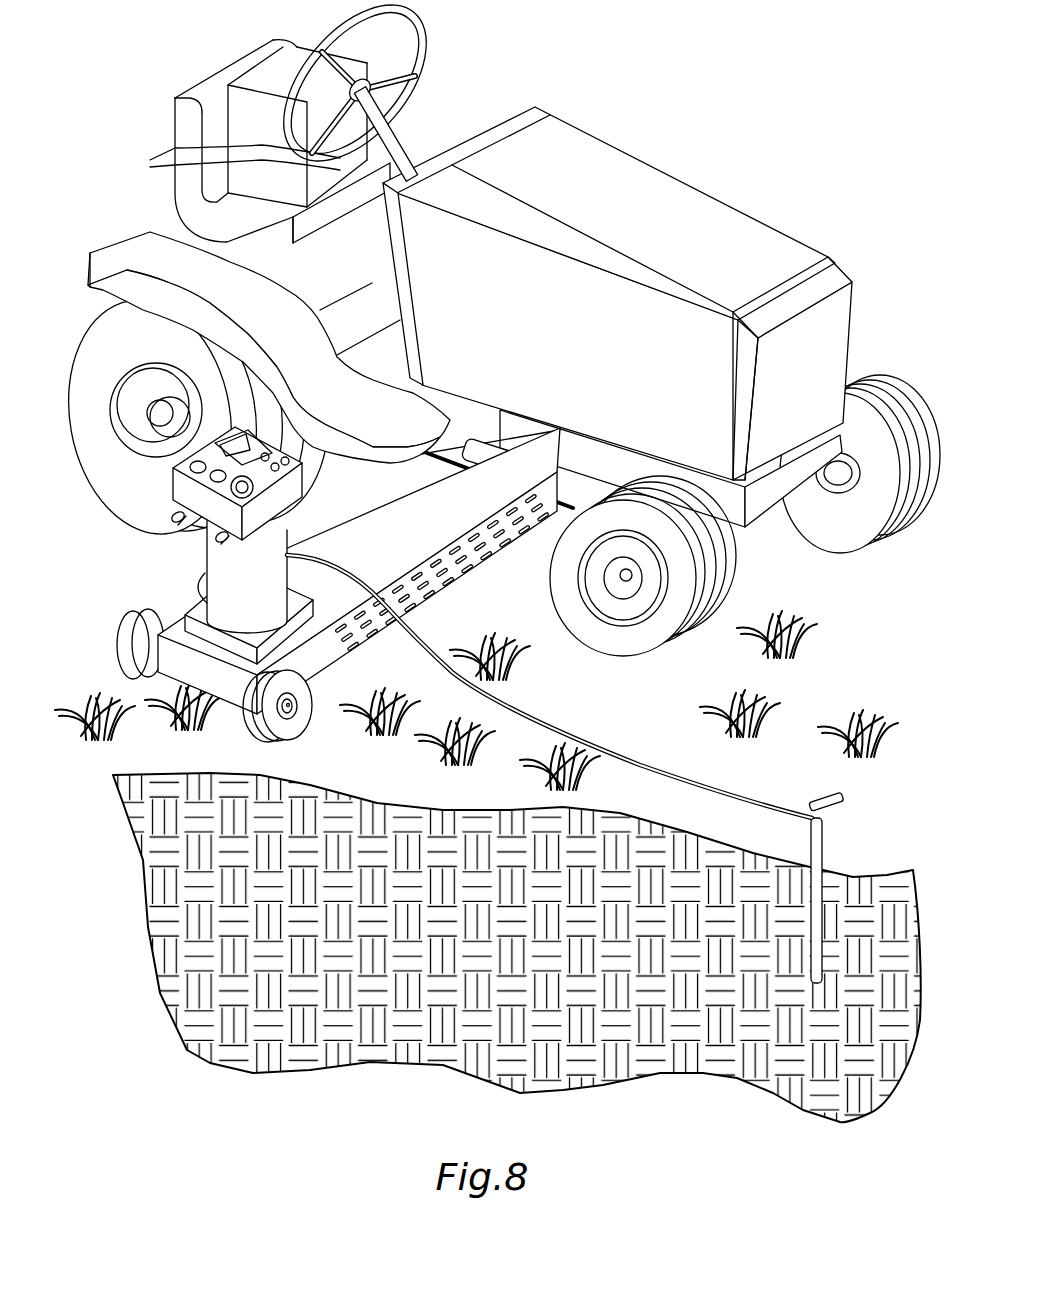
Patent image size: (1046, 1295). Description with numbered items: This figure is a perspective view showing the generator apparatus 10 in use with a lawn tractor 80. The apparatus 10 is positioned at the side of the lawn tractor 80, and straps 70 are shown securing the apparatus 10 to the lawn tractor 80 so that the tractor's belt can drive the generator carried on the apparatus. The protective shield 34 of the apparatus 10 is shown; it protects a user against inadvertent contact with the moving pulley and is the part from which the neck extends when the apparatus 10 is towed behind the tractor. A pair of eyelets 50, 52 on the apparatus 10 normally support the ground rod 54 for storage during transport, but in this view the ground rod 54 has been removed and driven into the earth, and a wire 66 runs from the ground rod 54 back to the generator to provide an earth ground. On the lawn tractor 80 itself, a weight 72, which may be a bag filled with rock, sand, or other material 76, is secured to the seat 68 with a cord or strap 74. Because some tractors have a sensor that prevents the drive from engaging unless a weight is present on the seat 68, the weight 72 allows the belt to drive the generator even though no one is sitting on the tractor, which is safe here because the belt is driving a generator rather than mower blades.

The apparatus 10 is at (150, 584).
The protective shield 34 is at (447, 470).
The eyelet 50 is at (172, 520).
The eyelet 52 is at (217, 543).
The ground rod 54 is at (848, 807).
The wire 66 is at (193, 593).
The seat 68 is at (187, 187).
The straps 70 is at (513, 502).
The weight 72 is at (250, 80).
The cord or strap 74 is at (175, 153).
The material 76 is at (273, 42).
The lawn tractor 80 is at (718, 102).